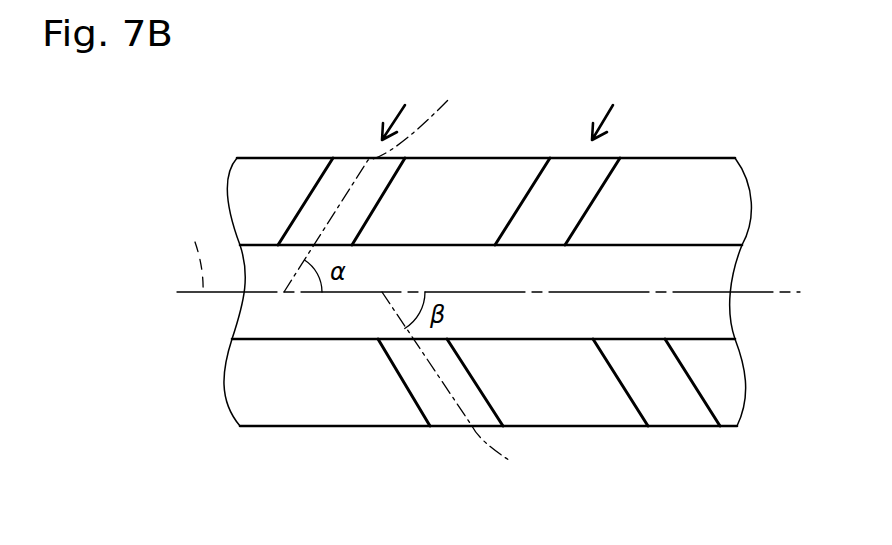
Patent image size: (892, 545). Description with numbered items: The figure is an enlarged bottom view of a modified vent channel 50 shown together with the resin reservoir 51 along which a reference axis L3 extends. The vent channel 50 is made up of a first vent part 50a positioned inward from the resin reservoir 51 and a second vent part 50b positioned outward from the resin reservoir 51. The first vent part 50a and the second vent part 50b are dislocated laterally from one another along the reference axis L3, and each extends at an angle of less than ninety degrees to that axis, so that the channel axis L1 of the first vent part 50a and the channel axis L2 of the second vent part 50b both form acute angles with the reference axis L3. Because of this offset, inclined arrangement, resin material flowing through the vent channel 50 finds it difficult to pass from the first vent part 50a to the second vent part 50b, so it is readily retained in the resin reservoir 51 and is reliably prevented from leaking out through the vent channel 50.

The vent channel 50 is at (501, 303).
The first vent part 50a is at (333, 185).
The second vent part 50b is at (650, 410).
The resin reservoir 51 is at (728, 270).
The channel axis of the first vent part L1 is at (386, 185).
The channel axis of the second vent part L2 is at (465, 387).
The reference axis L3 is at (195, 251).